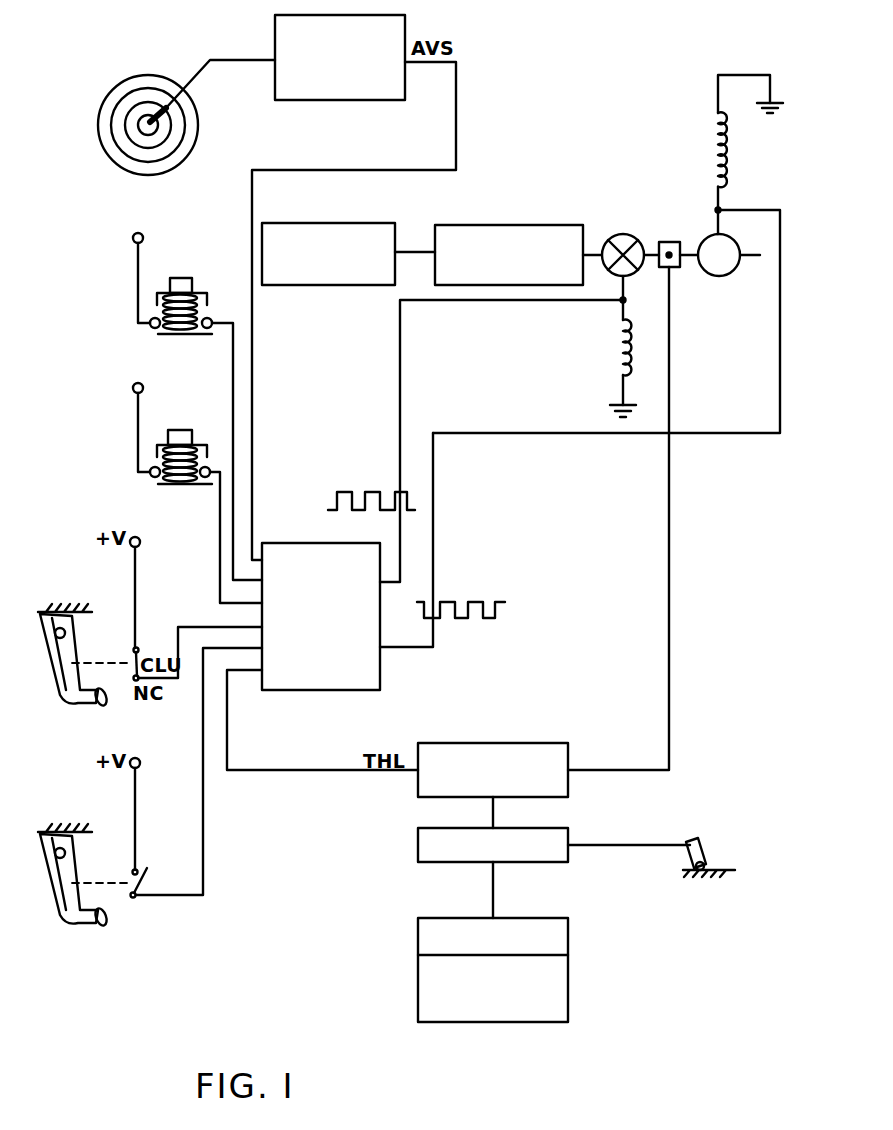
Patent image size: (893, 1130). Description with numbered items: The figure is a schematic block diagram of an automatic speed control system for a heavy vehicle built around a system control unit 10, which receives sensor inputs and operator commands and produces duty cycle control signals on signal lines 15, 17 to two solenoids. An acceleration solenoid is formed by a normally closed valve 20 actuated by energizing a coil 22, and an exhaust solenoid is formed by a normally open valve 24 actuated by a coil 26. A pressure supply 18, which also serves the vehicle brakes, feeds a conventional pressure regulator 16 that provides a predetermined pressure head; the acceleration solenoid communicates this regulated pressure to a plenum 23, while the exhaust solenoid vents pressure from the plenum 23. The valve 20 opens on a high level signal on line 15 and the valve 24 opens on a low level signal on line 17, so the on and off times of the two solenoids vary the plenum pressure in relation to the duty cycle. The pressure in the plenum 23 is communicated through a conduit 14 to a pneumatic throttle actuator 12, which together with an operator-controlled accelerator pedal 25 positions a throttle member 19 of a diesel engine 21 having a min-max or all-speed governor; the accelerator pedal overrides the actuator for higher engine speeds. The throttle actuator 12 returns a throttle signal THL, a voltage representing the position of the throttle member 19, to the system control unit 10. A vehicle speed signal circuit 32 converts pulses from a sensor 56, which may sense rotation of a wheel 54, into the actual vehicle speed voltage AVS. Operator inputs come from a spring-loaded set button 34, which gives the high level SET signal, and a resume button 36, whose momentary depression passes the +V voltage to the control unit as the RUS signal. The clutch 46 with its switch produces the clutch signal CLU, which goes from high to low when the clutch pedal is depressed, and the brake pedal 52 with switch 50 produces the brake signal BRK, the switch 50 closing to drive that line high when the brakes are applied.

The system control unit 10 is at (276, 683).
The pneumatic throttle actuator 12 is at (562, 752).
The conduit 14 is at (670, 650).
The signal line 15 is at (400, 380).
The pressure regulator 16 is at (511, 231).
The signal line 17 is at (433, 472).
The pressure supply 18 is at (385, 230).
The throttle member 19 is at (563, 857).
The normally closed valve 20 is at (633, 240).
The diesel engine 21 is at (553, 1013).
The coil 22 is at (624, 352).
The plenum 23 is at (675, 268).
The normally open valve 24 is at (736, 270).
The accelerator pedal 25 is at (700, 846).
The coil 26 is at (728, 146).
The vehicle speed signal circuit 32 is at (410, 20).
The set button 34 is at (185, 290).
The resume button 36 is at (177, 432).
The clutch 46 is at (68, 705).
The switch 50 is at (133, 900).
The brake pedal 52 is at (70, 925).
The wheel 54 is at (178, 152).
The sensor 56 is at (183, 120).